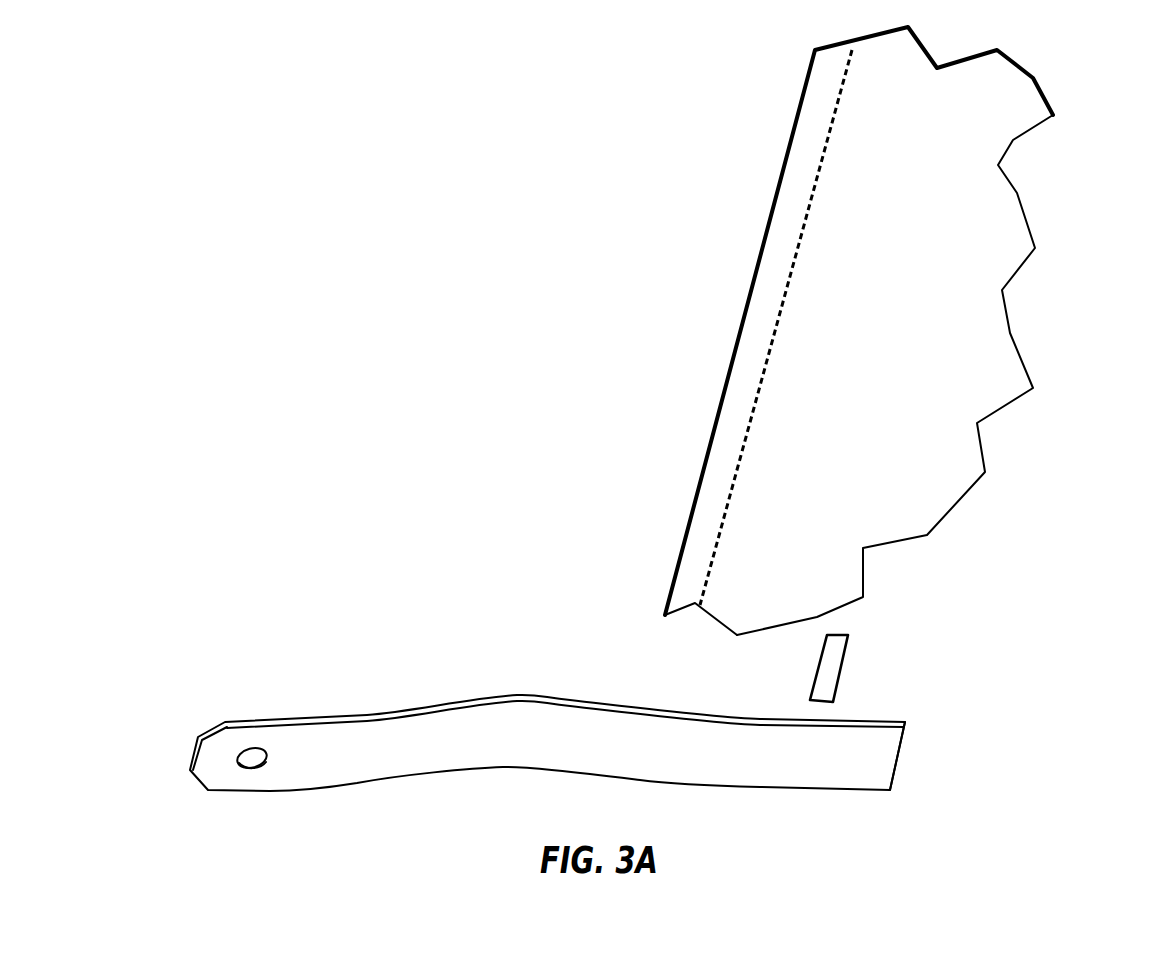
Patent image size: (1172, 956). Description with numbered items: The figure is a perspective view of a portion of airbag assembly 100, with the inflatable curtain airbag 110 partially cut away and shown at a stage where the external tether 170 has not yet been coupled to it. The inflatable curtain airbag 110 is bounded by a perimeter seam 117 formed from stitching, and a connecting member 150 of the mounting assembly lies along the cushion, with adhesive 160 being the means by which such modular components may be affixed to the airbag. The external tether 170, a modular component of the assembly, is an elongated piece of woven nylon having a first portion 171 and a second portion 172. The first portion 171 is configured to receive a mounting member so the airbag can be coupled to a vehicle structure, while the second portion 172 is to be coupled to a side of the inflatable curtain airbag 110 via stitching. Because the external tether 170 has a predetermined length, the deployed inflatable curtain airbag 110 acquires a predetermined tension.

The airbag assembly 100 is at (433, 170).
The inflatable curtain airbag 110 is at (697, 342).
The perimeter seam 117 is at (810, 192).
The connecting member 150 is at (932, 488).
The adhesive 160 is at (830, 660).
The external tether 170 is at (533, 677).
The first portion 171 is at (300, 743).
The second portion 172 is at (877, 747).